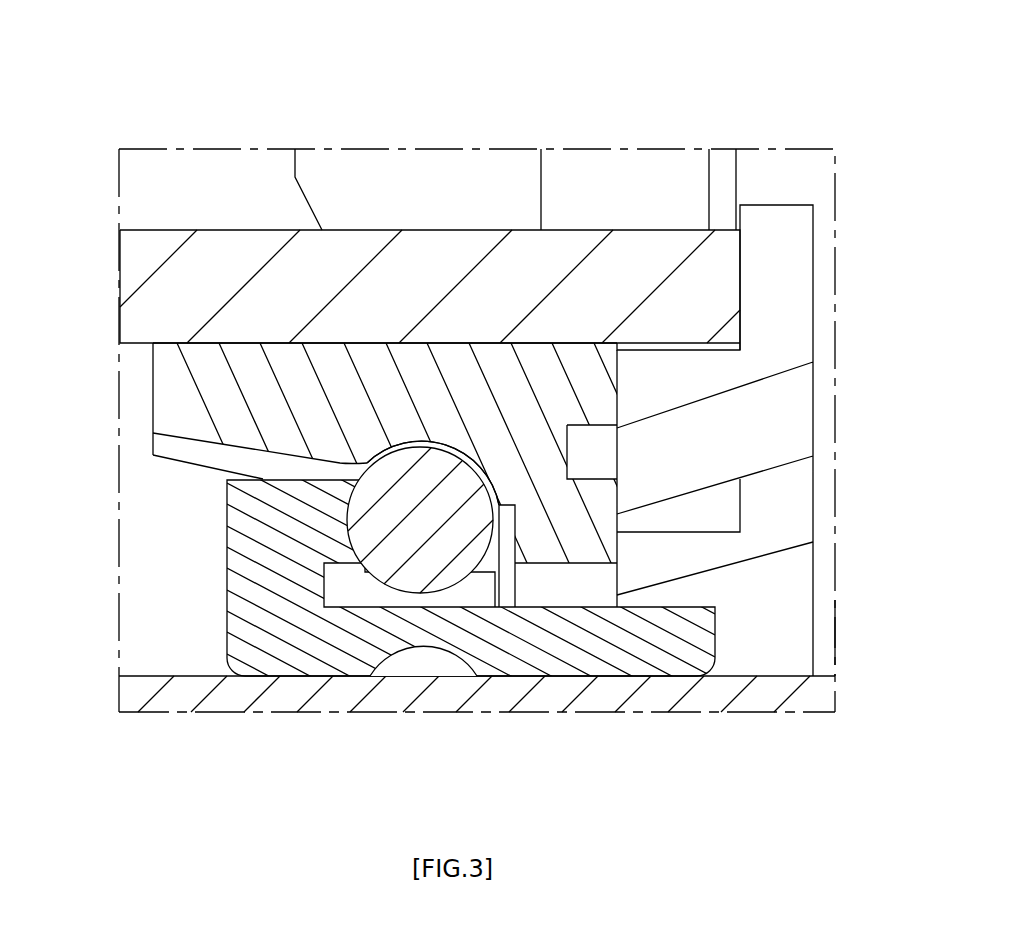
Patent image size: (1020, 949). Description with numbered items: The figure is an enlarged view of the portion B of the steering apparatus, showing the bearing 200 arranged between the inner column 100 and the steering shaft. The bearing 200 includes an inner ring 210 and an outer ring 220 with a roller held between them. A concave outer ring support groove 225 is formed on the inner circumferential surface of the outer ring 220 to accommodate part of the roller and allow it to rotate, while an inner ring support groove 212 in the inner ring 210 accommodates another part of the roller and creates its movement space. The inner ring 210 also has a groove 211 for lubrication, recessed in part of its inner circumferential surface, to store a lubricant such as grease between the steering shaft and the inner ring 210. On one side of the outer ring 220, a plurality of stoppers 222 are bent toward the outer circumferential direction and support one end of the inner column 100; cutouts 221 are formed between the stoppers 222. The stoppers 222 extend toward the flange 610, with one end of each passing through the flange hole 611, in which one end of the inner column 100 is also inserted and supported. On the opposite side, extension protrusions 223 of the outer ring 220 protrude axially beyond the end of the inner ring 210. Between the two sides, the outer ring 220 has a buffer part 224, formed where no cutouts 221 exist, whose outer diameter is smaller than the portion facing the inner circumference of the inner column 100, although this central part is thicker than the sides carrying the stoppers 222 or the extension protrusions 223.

The bearing 200 is at (167, 33).
The inner column 100 is at (148, 272).
The flange 610 is at (372, 177).
The flange hole 611 is at (453, 230).
The buffer part 224 is at (490, 352).
The outer ring support groove 225 is at (486, 351).
The outer ring 220 is at (158, 377).
The extension protrusions 223 is at (185, 423).
The inner ring support groove 212 is at (348, 517).
The inner ring 210 is at (221, 601).
The groove for lubrication 211 is at (436, 662).
The stoppers 222 is at (778, 277).
The cutouts 221 is at (706, 518).
The portion B is at (835, 648).